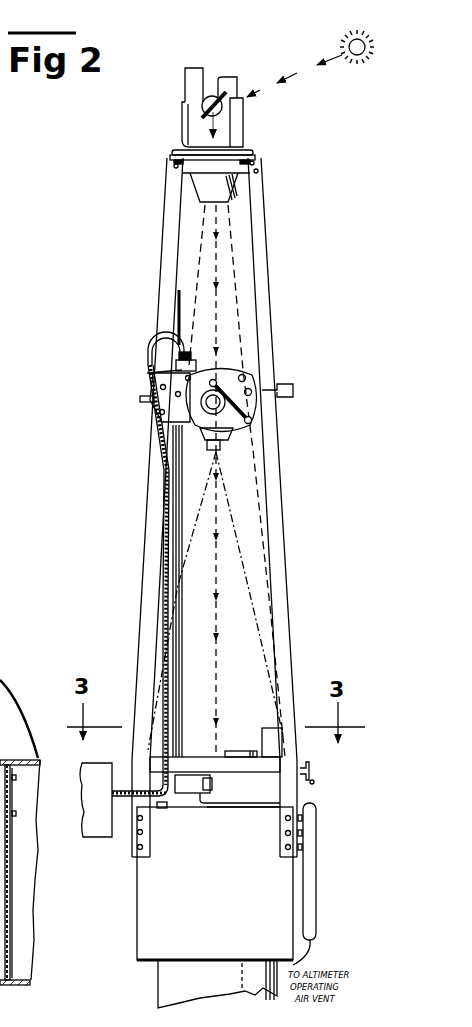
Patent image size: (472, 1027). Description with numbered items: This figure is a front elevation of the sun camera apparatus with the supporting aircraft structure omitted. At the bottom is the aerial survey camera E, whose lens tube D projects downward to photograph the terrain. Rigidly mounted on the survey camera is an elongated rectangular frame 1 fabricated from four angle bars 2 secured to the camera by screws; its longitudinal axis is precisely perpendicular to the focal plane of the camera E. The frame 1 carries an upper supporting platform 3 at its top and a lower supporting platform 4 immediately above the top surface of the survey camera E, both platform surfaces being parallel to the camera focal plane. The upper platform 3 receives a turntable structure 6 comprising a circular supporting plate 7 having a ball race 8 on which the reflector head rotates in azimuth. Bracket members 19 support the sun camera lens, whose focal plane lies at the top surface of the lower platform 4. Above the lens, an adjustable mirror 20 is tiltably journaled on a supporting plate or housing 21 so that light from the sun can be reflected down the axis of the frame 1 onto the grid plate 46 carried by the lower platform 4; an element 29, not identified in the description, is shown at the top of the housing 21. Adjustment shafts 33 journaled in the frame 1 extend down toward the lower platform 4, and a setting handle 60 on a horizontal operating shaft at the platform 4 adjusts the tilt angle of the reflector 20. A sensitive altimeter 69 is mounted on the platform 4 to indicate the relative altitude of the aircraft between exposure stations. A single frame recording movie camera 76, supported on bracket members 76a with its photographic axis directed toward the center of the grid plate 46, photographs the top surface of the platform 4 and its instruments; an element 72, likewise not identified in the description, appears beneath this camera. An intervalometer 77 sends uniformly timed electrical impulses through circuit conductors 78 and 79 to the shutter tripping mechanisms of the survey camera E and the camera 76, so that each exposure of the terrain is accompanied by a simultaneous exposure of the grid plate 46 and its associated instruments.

The frame 1 is at (297, 522).
The angle bars 2 is at (260, 220).
The upper supporting platform 3 is at (240, 169).
The lower supporting platform 4 is at (253, 765).
The turntable structure 6 is at (155, 148).
The circular supporting plate 7 is at (252, 157).
The ball race 8 is at (250, 155).
The bracket members 19 is at (237, 190).
The mirror 20 is at (220, 82).
The supporting plate or housing 21 is at (200, 127).
The sight tube 29 is at (190, 77).
The adjustment shafts 33 is at (178, 655).
The grid plate 46 is at (203, 746).
The setting handle 60 is at (313, 780).
The sensitive altimeter 69 is at (193, 793).
The photocell eyepiece 72 is at (220, 442).
The single frame recording camera 76 is at (250, 402).
The bracket members 76a is at (280, 387).
The intervalometer 77 is at (88, 830).
The circuit conductor 78 is at (122, 765).
The circuit conductor 79 is at (162, 702).
The aerial survey camera E is at (145, 935).
The lens tube D is at (170, 983).